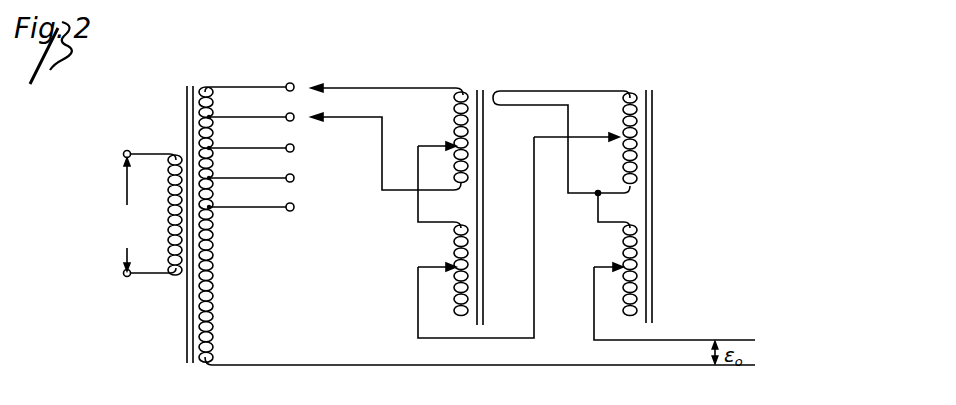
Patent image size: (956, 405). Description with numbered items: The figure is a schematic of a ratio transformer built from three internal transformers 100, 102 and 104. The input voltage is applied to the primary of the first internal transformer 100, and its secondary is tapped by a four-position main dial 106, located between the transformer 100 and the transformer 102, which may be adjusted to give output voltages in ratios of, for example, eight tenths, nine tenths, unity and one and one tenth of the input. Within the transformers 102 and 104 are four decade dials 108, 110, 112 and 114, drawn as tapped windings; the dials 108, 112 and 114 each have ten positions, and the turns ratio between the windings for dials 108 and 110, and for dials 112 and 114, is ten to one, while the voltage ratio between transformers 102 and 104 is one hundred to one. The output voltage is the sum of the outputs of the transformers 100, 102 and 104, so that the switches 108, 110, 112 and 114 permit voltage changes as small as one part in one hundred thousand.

The internal transformer 100 is at (194, 81).
The internal transformer 102 is at (477, 85).
The internal transformer 104 is at (645, 85).
The four-position main dial 106 is at (331, 78).
The decade dial 108 is at (434, 145).
The decade dial 110 is at (434, 265).
The decade dial 112 is at (593, 140).
The decade dial 114 is at (606, 270).